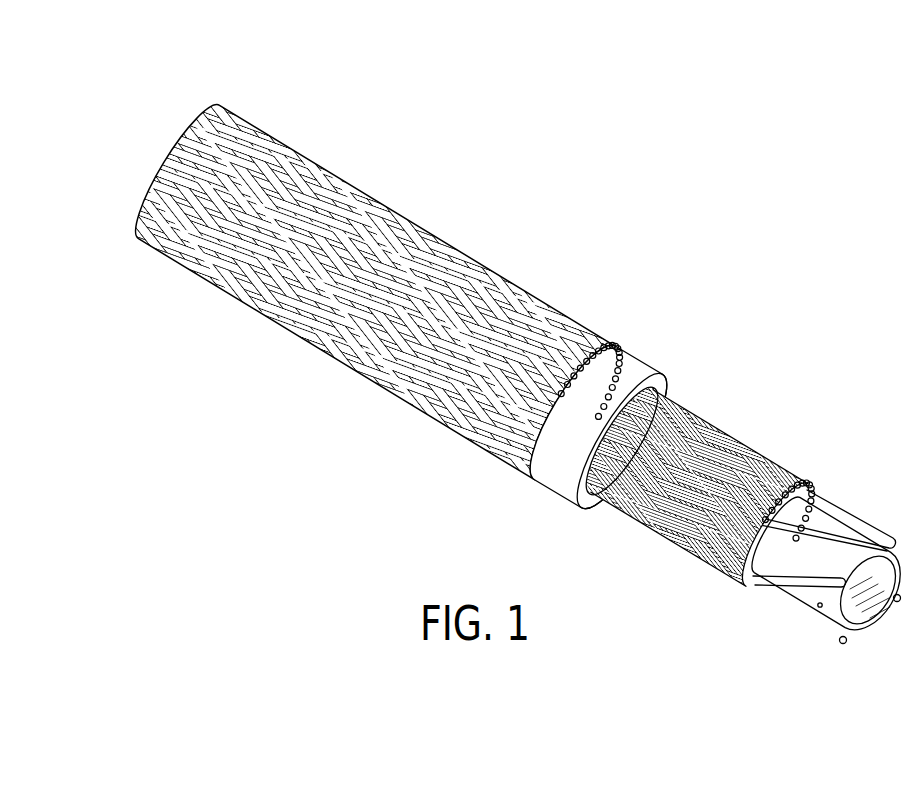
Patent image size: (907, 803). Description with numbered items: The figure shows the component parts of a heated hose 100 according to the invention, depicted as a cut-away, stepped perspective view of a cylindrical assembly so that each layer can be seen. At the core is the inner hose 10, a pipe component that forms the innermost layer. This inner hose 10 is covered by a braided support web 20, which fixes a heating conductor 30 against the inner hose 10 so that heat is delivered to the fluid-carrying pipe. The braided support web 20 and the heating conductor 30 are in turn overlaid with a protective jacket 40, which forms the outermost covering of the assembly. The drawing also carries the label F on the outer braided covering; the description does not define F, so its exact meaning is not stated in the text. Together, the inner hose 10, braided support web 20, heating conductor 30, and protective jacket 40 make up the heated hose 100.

The heated hose 100 is at (521, 351).
The outer braided fiber layer F is at (399, 234).
The protective jacket 40 is at (602, 378).
The braided support web 20 is at (700, 430).
The heating conductor 30 is at (873, 533).
The inner hose 10 is at (820, 607).